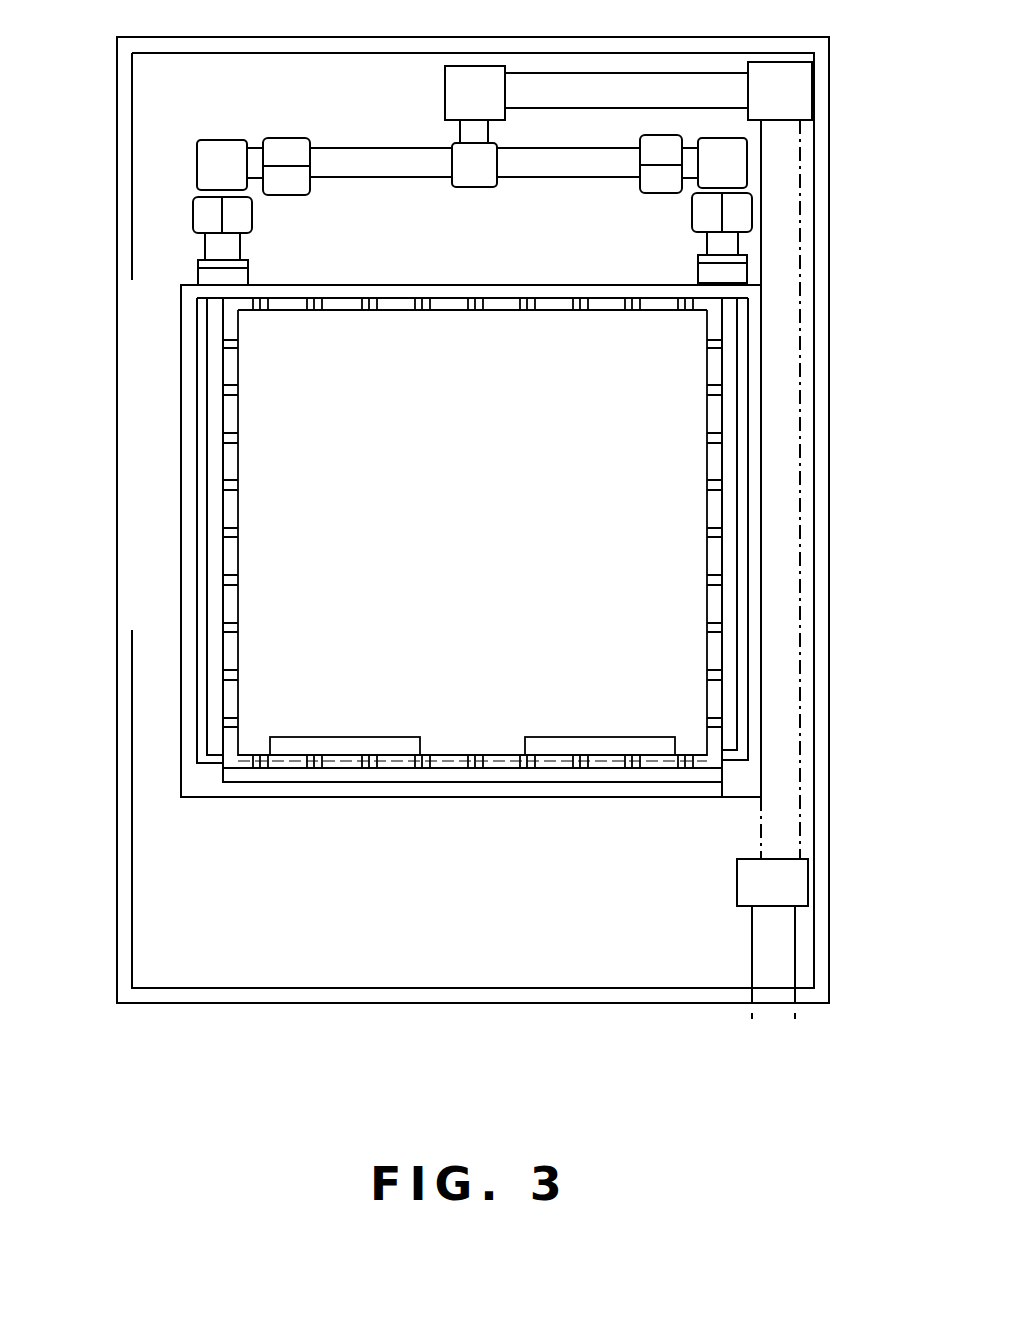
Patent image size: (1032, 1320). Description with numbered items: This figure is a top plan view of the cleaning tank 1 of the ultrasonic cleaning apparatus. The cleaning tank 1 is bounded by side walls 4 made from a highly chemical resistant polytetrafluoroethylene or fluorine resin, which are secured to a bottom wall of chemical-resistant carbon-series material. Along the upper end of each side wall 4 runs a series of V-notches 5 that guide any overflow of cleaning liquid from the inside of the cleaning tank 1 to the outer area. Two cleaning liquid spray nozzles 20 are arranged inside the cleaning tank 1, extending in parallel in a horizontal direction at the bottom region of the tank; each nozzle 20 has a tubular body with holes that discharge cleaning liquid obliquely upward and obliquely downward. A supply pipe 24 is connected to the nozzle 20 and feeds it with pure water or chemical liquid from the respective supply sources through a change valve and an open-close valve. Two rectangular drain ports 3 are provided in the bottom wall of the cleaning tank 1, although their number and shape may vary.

The cleaning tank 1 is at (265, 797).
The drain port 3 is at (400, 747).
The side wall 4 is at (345, 790).
The V-notch 5 is at (232, 628).
The cleaning liquid spray nozzle 20 is at (193, 277).
The supply pipe 24 is at (787, 830).